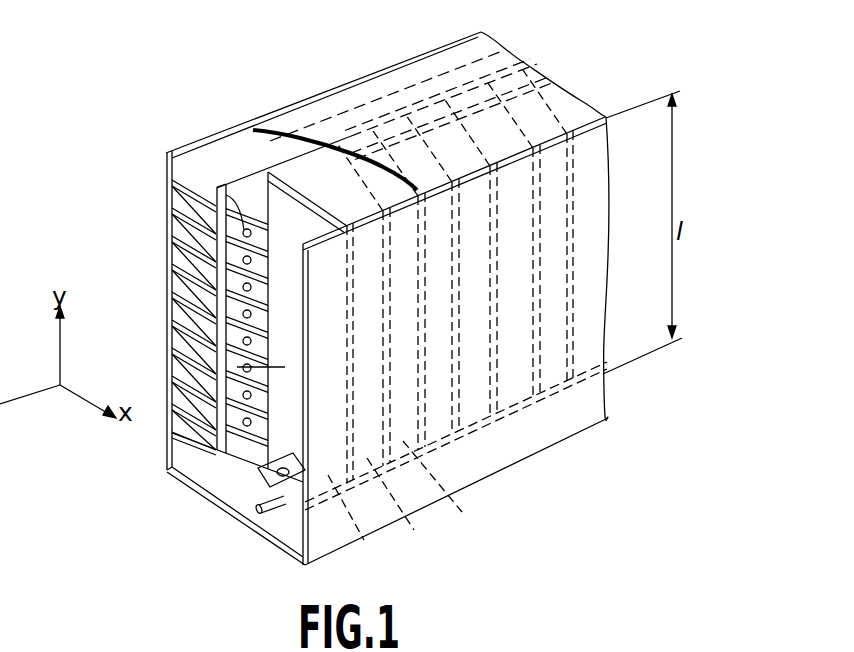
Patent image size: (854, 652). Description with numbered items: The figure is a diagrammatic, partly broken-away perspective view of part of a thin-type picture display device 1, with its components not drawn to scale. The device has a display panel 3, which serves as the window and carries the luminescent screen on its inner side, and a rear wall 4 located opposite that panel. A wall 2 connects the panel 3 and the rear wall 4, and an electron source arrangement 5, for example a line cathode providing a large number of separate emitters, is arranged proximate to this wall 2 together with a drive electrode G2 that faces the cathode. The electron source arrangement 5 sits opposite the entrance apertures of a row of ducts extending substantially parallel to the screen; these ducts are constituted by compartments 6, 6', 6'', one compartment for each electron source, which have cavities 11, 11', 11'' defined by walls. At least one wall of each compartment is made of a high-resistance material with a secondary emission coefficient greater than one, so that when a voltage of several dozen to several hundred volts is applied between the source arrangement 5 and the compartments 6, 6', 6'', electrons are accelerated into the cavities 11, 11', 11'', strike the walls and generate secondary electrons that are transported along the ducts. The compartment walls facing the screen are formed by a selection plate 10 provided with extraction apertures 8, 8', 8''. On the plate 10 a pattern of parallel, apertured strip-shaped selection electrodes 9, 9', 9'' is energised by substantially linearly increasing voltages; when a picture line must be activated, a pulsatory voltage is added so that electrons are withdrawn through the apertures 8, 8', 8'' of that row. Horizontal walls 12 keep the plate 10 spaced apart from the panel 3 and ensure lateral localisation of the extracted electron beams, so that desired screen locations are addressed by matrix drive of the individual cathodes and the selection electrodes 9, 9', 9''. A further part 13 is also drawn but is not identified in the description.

The picture display device 1 is at (629, 390).
The wall 2 is at (197, 492).
The display panel 3 is at (212, 158).
The rear wall 4 is at (568, 432).
The electron source arrangement 5 is at (267, 515).
The compartment 6 is at (356, 401).
The compartment 6' is at (388, 352).
The compartment 6'' is at (437, 331).
The extraction aperture 8 is at (170, 200).
The extraction aperture 8' is at (170, 284).
The extraction aperture 8'' is at (170, 318).
The selection electrode 9 is at (247, 173).
The selection electrode 9' is at (262, 246).
The selection electrode 9'' is at (272, 297).
The selection plate 10 is at (502, 73).
The cavity 11 is at (201, 319).
The cavity 11' is at (304, 270).
The cavity 11'' is at (335, 115).
The horizontal wall 12 is at (177, 205).
The end plate 13 is at (180, 477).
The drive electrode G2 is at (255, 482).